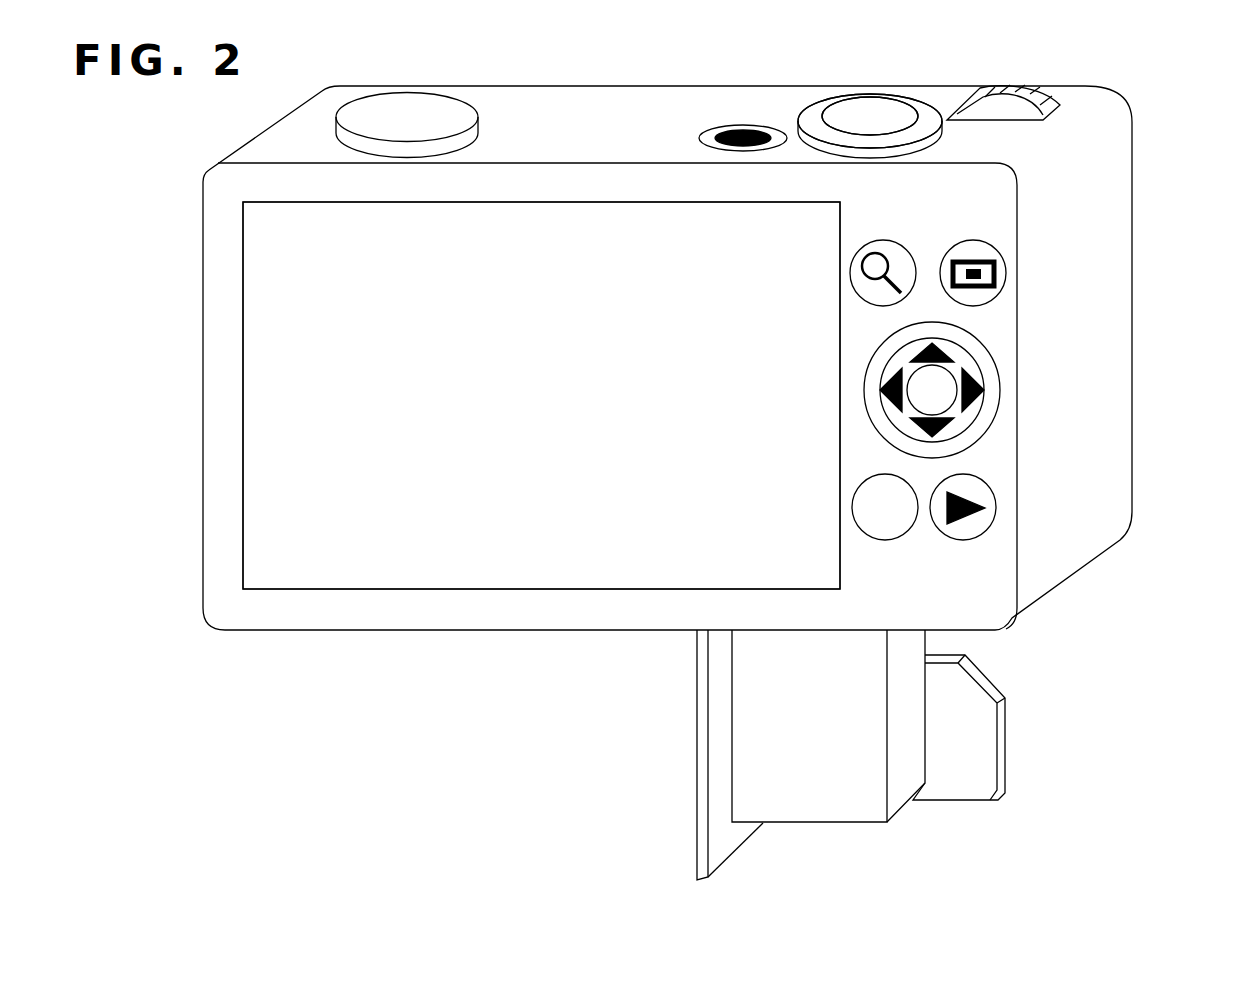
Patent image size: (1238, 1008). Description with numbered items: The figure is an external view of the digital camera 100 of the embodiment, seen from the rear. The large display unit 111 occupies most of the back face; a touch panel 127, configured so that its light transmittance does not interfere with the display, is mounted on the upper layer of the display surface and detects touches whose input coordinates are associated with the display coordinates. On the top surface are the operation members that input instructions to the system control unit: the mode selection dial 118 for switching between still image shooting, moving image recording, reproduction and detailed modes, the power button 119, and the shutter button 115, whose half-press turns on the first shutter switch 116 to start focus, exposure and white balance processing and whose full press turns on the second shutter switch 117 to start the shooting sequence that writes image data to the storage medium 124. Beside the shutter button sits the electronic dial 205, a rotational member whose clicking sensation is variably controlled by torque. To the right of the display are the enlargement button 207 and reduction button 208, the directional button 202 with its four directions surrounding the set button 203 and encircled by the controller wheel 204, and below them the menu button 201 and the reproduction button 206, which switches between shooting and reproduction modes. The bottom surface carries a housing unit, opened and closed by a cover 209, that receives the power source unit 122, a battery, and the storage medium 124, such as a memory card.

The digital camera 100 is at (323, 636).
The display unit 111 is at (459, 591).
The touch panel 127 is at (541, 395).
The shutter button 115 is at (868, 107).
The first shutter switch 116 is at (870, 121).
The second shutter switch 117 is at (870, 116).
The mode selection dial 118 is at (419, 118).
The power button 119 is at (735, 123).
The power source unit 122 is at (848, 823).
The storage medium 124 is at (967, 802).
The menu button 201 is at (900, 535).
The directional button 202 is at (1045, 399).
The set button 203 is at (950, 408).
The controller wheel 204 is at (962, 435).
The electronic dial 205 is at (1062, 103).
The reproduction button 206 is at (993, 523).
The enlargement button 207 is at (903, 256).
The reduction button 208 is at (1000, 272).
The cover 209 is at (724, 833).